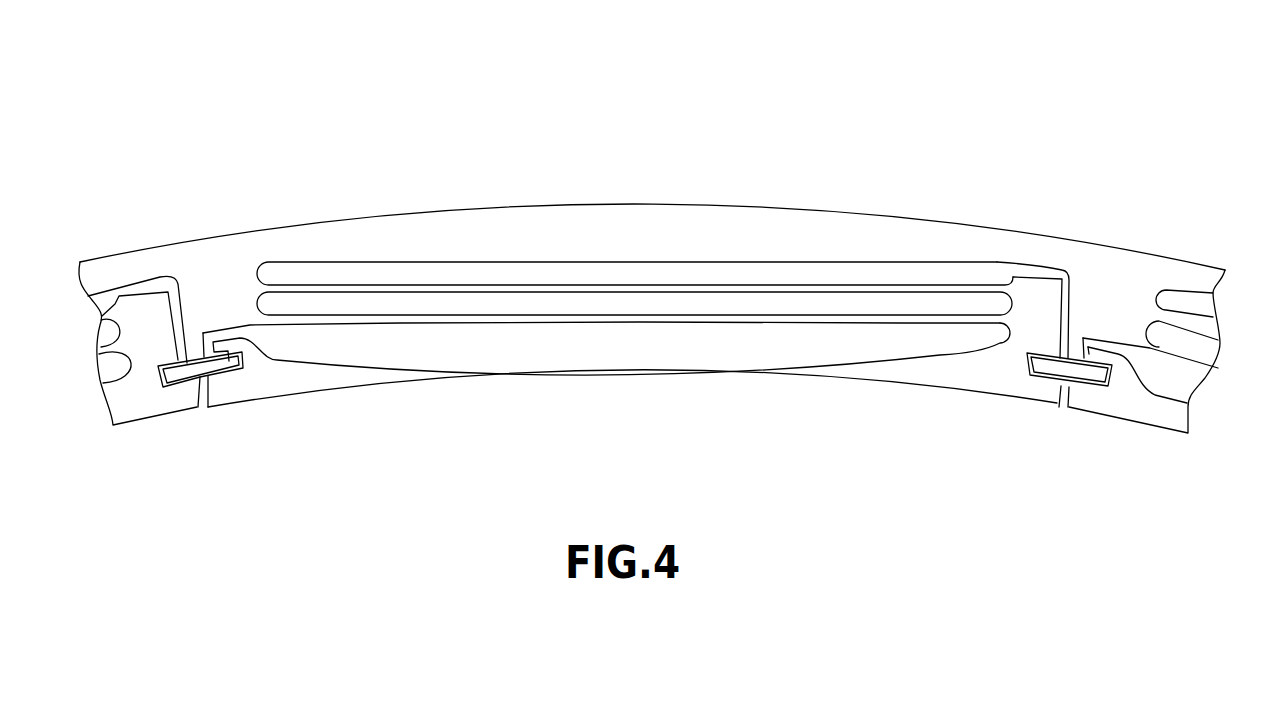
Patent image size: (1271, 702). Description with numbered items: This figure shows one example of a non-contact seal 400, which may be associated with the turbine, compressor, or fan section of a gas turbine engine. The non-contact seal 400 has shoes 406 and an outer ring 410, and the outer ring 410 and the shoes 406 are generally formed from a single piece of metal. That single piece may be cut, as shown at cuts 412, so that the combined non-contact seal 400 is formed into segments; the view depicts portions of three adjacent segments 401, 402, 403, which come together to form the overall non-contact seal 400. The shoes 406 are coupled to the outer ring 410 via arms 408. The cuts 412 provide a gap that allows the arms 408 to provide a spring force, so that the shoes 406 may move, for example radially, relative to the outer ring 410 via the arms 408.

The non-contact seal 400 is at (917, 122).
The first adjacent segment 401 is at (182, 395).
The second adjacent segment 402 is at (548, 355).
The third adjacent segment 403 is at (1162, 417).
The shoes 406 is at (142, 407).
The arms 408 is at (592, 315).
The outer ring 410 is at (212, 255).
The cuts 412 is at (397, 323).